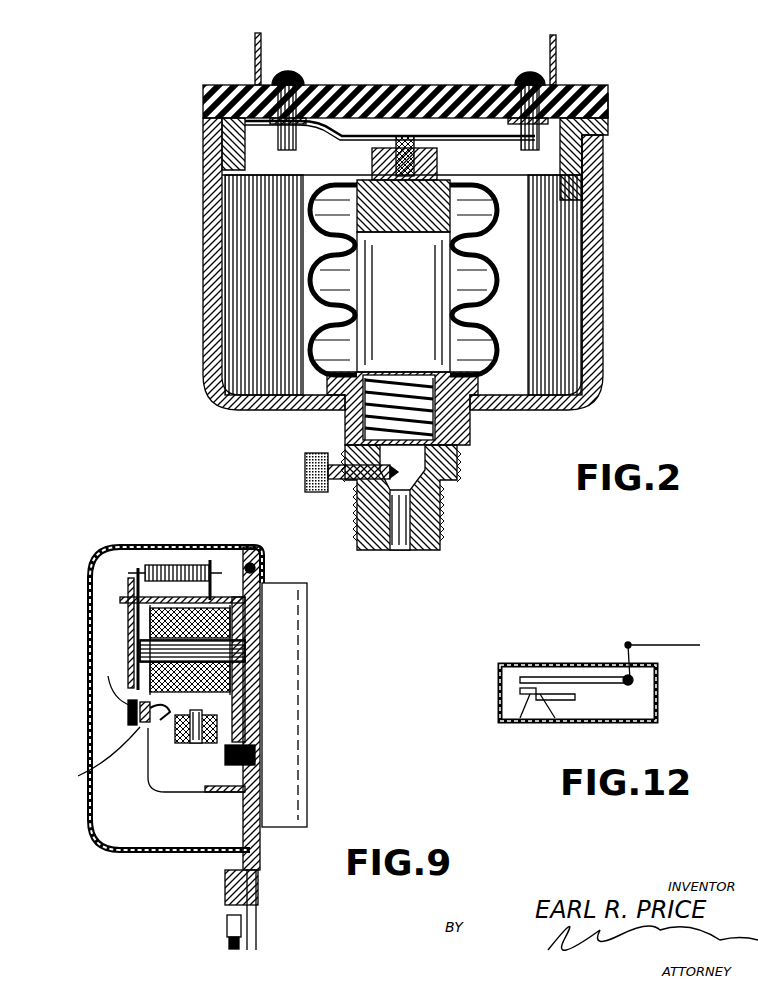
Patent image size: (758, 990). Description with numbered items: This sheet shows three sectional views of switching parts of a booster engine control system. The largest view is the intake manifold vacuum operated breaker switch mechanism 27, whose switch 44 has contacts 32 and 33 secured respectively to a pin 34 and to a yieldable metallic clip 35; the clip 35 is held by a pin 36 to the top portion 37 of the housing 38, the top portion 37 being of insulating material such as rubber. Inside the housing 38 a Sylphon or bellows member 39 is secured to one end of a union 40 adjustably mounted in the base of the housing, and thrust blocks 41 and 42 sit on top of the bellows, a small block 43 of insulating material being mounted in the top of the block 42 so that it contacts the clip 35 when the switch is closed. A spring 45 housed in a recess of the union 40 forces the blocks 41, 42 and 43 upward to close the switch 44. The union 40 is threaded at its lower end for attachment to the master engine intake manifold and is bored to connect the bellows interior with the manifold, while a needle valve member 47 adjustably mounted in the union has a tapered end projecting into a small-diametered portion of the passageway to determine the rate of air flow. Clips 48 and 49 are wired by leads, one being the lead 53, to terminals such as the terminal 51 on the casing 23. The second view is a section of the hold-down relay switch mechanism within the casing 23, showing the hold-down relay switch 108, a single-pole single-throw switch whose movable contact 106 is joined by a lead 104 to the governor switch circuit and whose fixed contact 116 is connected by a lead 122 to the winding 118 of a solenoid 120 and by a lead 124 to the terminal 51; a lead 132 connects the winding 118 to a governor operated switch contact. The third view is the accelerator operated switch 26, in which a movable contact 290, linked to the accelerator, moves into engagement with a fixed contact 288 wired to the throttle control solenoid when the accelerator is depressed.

In FIG. 2, the intake manifold vacuum operated breaker switch mechanism 27 is at (605, 287).
In FIG. 2, the housing 38 is at (205, 226).
In FIG. 2, the top portion 37 is at (336, 85).
In FIG. 2, the contact 32 is at (566, 105).
In FIG. 2, the switch 44 is at (609, 100).
In FIG. 2, the contact 33 is at (585, 148).
In FIG. 2, the yieldable metallic clip 35 is at (360, 128).
In FIG. 2, the clip 48 is at (256, 51).
In FIG. 2, the clip 49 is at (558, 54).
In FIG. 2, the pin 36 is at (290, 85).
In FIG. 2, the pin 34 is at (527, 100).
In FIG. 2, the small block 43 is at (420, 128).
In FIG. 2, the thrust block 42 is at (437, 178).
In FIG. 2, the thrust block 41 is at (425, 320).
In FIG. 2, the bellows member 39 is at (478, 264).
In FIG. 2, the spring 45 is at (365, 410).
In FIG. 2, the union 40 is at (455, 456).
In FIG. 2, the needle valve member 47 is at (305, 472).
In FIG. 9, the casing 23 is at (92, 838).
In FIG. 9, the lead 132 is at (188, 565).
In FIG. 9, the solenoid 120 is at (215, 605).
In FIG. 9, the winding 118 is at (245, 690).
In FIG. 9, the lead 104 is at (108, 678).
In FIG. 9, the movable contact 106 is at (128, 712).
In FIG. 9, the fixed contact 116 is at (145, 728).
In FIG. 9, the hold-down relay switch 108 is at (87, 756).
In FIG. 9, the lead 122 is at (165, 730).
In FIG. 9, the lead 124 is at (185, 795).
In FIG. 9, the terminal 51 is at (252, 907).
In FIG. 9, the lead 53 is at (243, 946).
In FIG. 12, the accelerator operated switch 26 is at (500, 684).
In FIG. 12, the movable contact 290 is at (548, 678).
In FIG. 12, the fixed contact 288 is at (555, 716).